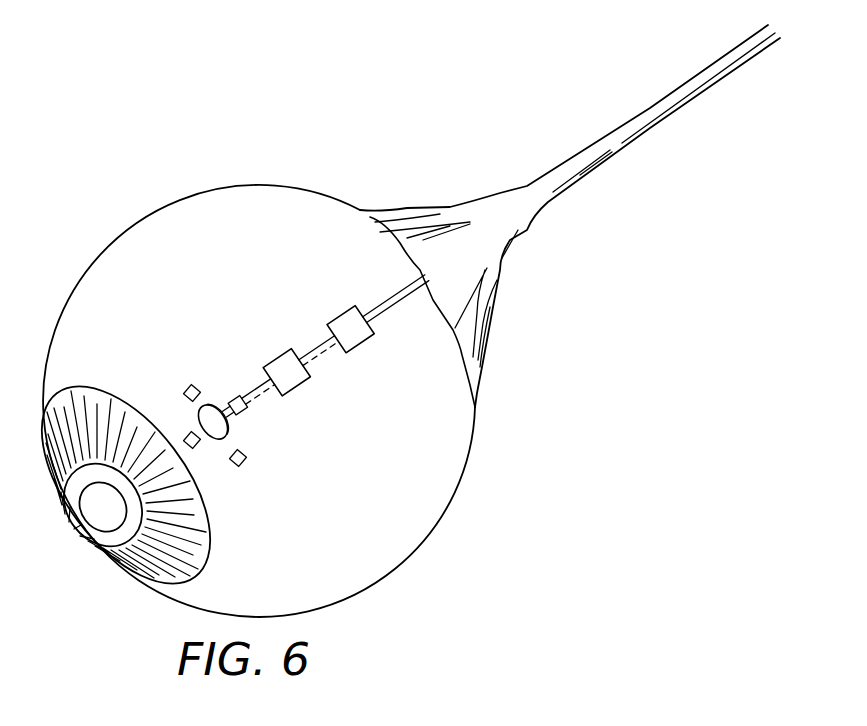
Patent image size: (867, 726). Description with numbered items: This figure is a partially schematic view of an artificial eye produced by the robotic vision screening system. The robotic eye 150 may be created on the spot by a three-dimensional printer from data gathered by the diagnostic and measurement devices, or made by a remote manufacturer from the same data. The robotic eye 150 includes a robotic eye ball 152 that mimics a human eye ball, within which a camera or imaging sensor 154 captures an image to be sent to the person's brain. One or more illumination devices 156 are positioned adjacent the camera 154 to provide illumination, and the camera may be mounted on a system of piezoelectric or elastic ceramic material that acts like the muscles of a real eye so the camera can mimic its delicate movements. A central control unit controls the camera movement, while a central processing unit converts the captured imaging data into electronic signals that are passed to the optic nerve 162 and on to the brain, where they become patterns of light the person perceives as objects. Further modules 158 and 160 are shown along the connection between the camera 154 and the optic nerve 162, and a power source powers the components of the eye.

The robotic eye 150 is at (400, 184).
The robotic eye ball 152 is at (397, 513).
The camera or imaging sensor 154 is at (217, 400).
The illumination devices 156 is at (237, 467).
The module 158 is at (295, 377).
The module 160 is at (343, 318).
The optic nerve 162 is at (558, 172).